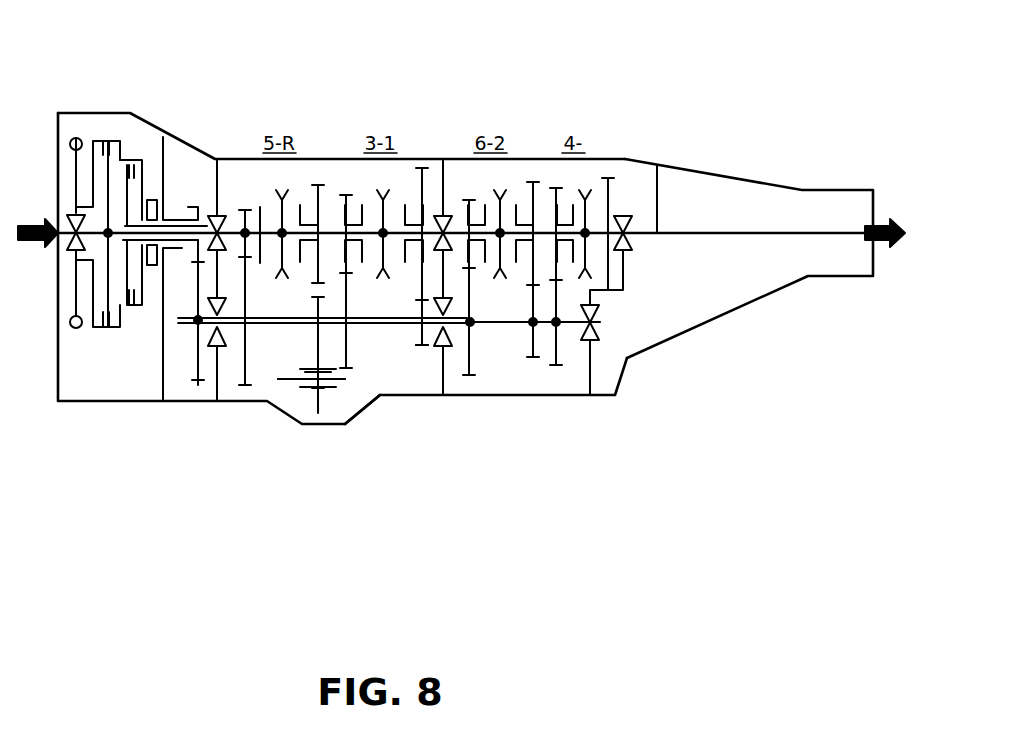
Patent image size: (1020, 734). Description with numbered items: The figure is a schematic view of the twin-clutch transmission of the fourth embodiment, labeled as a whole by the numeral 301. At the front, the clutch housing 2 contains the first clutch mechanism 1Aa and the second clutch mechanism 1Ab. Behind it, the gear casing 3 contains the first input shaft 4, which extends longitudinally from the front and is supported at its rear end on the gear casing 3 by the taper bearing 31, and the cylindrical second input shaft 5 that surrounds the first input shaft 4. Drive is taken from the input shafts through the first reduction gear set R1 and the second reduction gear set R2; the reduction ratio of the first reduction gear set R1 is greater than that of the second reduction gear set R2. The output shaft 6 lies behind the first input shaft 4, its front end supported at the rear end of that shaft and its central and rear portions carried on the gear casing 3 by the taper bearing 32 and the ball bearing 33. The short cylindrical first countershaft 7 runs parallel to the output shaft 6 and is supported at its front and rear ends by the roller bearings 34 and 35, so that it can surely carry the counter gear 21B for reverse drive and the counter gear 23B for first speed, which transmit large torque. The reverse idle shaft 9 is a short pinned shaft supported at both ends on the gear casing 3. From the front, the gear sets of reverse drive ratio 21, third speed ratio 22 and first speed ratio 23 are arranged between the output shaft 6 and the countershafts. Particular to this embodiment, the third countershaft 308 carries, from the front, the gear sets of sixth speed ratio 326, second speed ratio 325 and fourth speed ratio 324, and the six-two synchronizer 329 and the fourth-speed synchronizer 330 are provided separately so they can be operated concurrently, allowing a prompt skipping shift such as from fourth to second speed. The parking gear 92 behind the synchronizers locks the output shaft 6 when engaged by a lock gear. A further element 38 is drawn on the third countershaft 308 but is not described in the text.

The first clutch mechanism 1Aa is at (97, 140).
The second clutch mechanism 1Ab is at (136, 170).
The clutch housing 2 is at (107, 404).
The gear casing 3 is at (396, 398).
The first input shaft 4 is at (205, 200).
The second input shaft 5 is at (183, 203).
The output shaft 6 is at (657, 168).
The first countershaft 7 is at (368, 332).
The reverse idle shaft 9 is at (290, 382).
The gear set of reverse drive ratio 21 is at (313, 184).
The gear set of third speed ratio 22 is at (347, 194).
The gear set of first speed ratio 23 is at (420, 167).
The counter gear for reverse drive 21B is at (317, 345).
The counter gear for first speed ratio 23B is at (422, 343).
The taper bearing 31 is at (229, 205).
The taper bearing 32 is at (443, 214).
The ball bearing 33 is at (624, 214).
The roller bearing 34 is at (212, 350).
The roller bearing 35 is at (453, 335).
The clutch 38 is at (598, 343).
The parking gear 92 is at (608, 177).
The transmission 301 is at (680, 166).
The third countershaft 308 is at (503, 325).
The gear set of forth speed ratio 324 is at (556, 366).
The gear set of second speed ratio 325 is at (533, 360).
The gear set of sixth speed ratio 326 is at (470, 378).
The 6-2 synchronizer 329 is at (504, 276).
The 4 synchronizer 330 is at (591, 280).
The first reduction gear set R1 is at (245, 392).
The second reduction gear set R2 is at (197, 388).